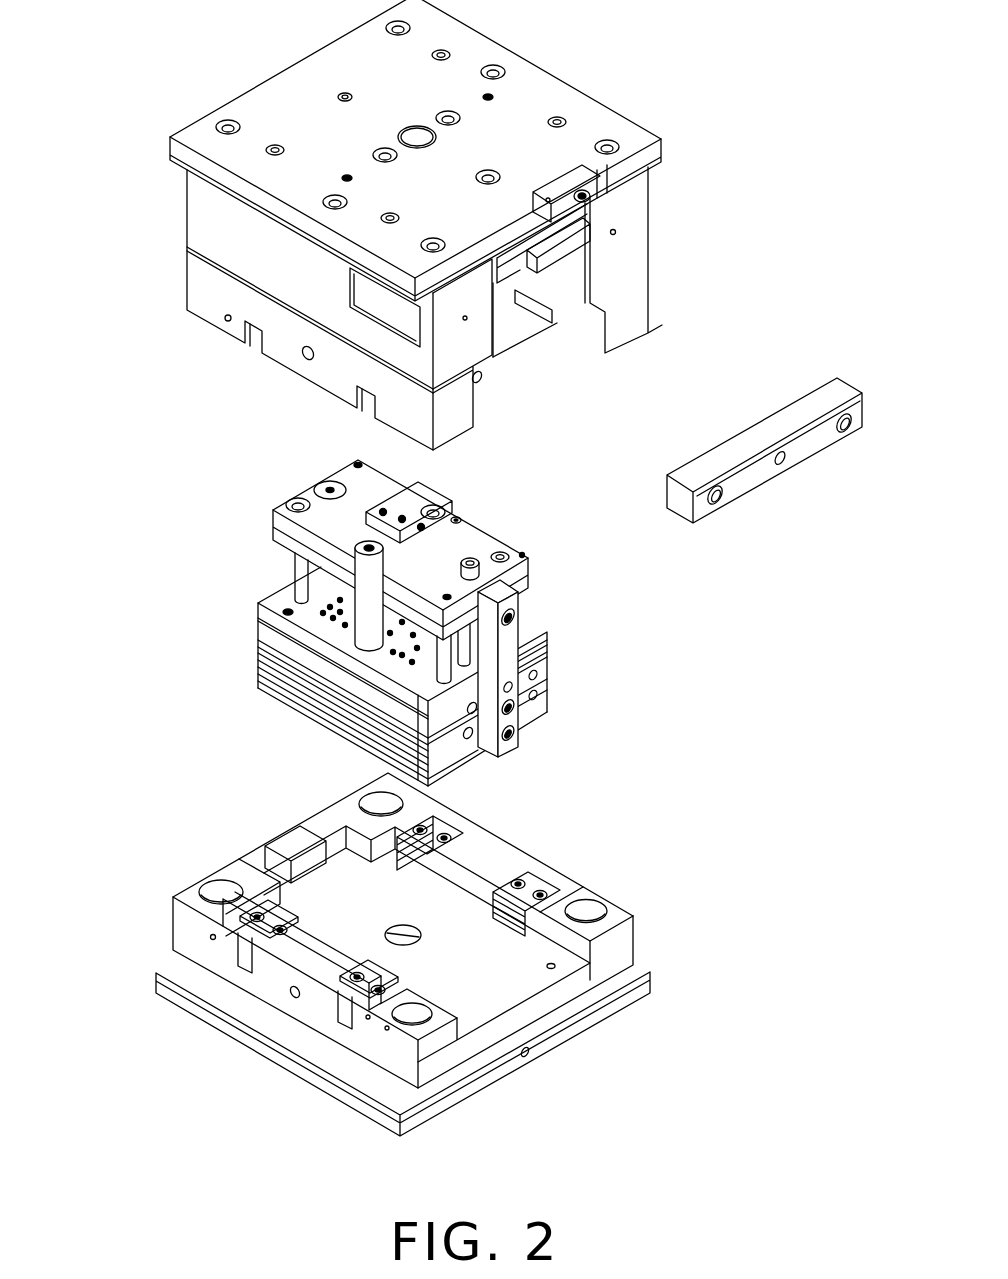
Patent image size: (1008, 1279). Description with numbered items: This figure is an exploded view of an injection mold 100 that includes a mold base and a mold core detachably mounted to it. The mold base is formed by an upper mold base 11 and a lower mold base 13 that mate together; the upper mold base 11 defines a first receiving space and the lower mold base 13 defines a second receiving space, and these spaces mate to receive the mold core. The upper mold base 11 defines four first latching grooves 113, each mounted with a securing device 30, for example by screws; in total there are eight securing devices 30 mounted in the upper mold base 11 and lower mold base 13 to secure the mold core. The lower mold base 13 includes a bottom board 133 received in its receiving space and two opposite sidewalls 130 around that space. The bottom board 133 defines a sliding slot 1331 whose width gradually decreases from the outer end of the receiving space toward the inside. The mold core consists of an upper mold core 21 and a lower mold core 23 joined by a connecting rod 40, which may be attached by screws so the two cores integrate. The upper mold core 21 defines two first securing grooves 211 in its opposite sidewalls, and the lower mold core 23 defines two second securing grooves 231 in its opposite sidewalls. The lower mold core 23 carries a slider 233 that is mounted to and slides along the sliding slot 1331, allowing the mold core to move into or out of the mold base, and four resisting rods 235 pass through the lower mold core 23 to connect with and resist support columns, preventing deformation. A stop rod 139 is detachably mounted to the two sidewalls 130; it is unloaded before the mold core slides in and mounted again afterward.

The injection mold 100 is at (226, 32).
The upper mold base 11 is at (183, 958).
The first latching groove 113 is at (253, 910).
The lower mold base 13 is at (200, 163).
The sidewall 130 is at (627, 217).
The bottom board 133 is at (567, 232).
The sliding slot 1331 is at (583, 270).
The stop rod 139 is at (797, 418).
The upper mold core 21 is at (540, 695).
The first securing groove 211 is at (432, 780).
The lower mold core 23 is at (536, 664).
The second securing groove 231 is at (430, 742).
The slider 233 is at (392, 512).
The resisting rod 235 is at (363, 597).
The securing device 30 is at (528, 893).
The connecting rod 40 is at (510, 640).